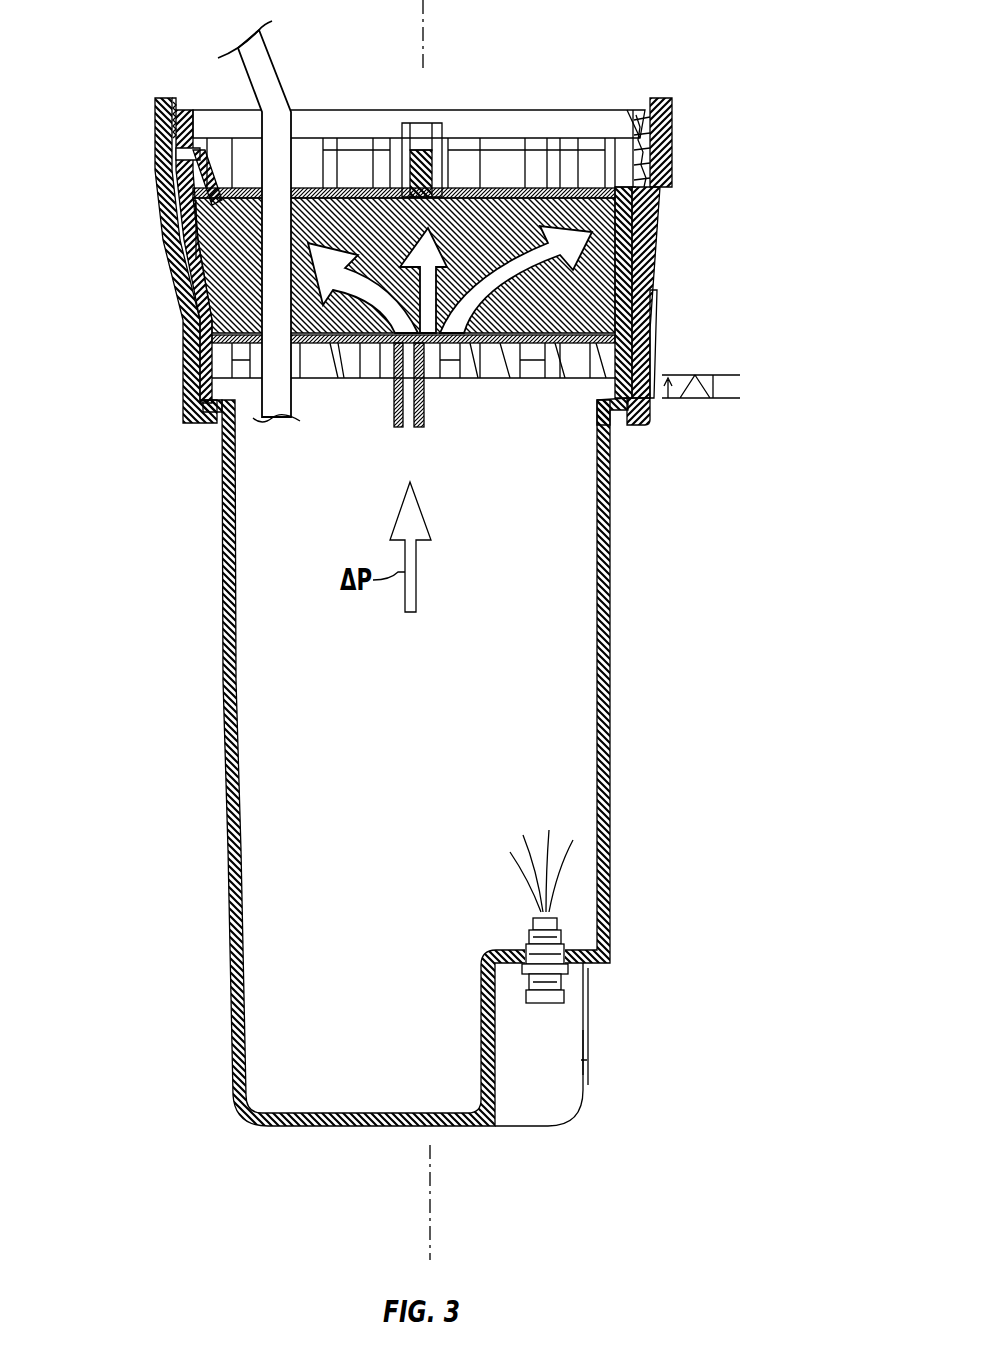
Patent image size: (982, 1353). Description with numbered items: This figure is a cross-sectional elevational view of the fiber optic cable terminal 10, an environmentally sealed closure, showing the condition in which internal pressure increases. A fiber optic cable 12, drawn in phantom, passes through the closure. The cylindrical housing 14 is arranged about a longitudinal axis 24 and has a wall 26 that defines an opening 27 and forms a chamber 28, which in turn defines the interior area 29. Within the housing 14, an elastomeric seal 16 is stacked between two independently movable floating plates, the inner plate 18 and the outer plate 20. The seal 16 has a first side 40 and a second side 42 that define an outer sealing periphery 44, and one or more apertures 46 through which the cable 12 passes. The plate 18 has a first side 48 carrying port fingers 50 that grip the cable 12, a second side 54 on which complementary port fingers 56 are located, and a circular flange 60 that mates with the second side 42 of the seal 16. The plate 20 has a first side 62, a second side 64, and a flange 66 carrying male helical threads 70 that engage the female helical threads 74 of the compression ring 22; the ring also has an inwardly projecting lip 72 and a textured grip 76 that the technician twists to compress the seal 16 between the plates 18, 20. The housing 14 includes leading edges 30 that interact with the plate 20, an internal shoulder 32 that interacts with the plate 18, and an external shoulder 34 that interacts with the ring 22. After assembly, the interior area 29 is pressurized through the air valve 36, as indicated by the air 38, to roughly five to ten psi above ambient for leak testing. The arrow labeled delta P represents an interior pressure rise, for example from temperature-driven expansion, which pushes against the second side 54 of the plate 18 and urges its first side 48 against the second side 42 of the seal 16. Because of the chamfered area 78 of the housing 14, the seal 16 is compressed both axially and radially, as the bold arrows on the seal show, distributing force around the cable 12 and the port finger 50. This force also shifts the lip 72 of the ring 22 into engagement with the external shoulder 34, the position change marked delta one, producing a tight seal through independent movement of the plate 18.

The fiber optic cable terminal 10 is at (722, 97).
The fiber optic cable 12 is at (257, 97).
The housing 14 is at (625, 504).
The elastomeric seal 16 is at (585, 292).
The first floating plate 18 is at (590, 336).
The second floating plate 20 is at (623, 112).
The compression ring 22 is at (170, 392).
The longitudinal axis 24 is at (425, 40).
The wall 26 is at (608, 622).
The opening 27 is at (215, 112).
The chamber 28 is at (505, 140).
The interior area 29 is at (541, 475).
The leading edge 30 is at (668, 130).
The internal shoulder 32 is at (612, 394).
The external shoulder 34 is at (652, 410).
The air valve 36 is at (560, 986).
The air 38 is at (570, 892).
The first side of seal 40 is at (194, 212).
The second side of seal 42 is at (603, 312).
The outer sealing periphery 44 is at (172, 253).
The aperture 46 is at (182, 220).
The first side of first plate 48 is at (466, 370).
The port finger 50 is at (186, 283).
The second side of first plate 54 is at (212, 358).
The complementary port fingers 56 is at (300, 345).
The flange 60 is at (200, 312).
The first side of second plate 62 is at (668, 158).
The second side of second plate 64 is at (660, 201).
The flange of second plate 66 is at (658, 100).
The male helical threads 70 is at (180, 138).
The lip 72 is at (213, 427).
The female helical threads 74 is at (182, 96).
The textured grip 76 is at (653, 298).
The chamfered area 78 is at (660, 223).